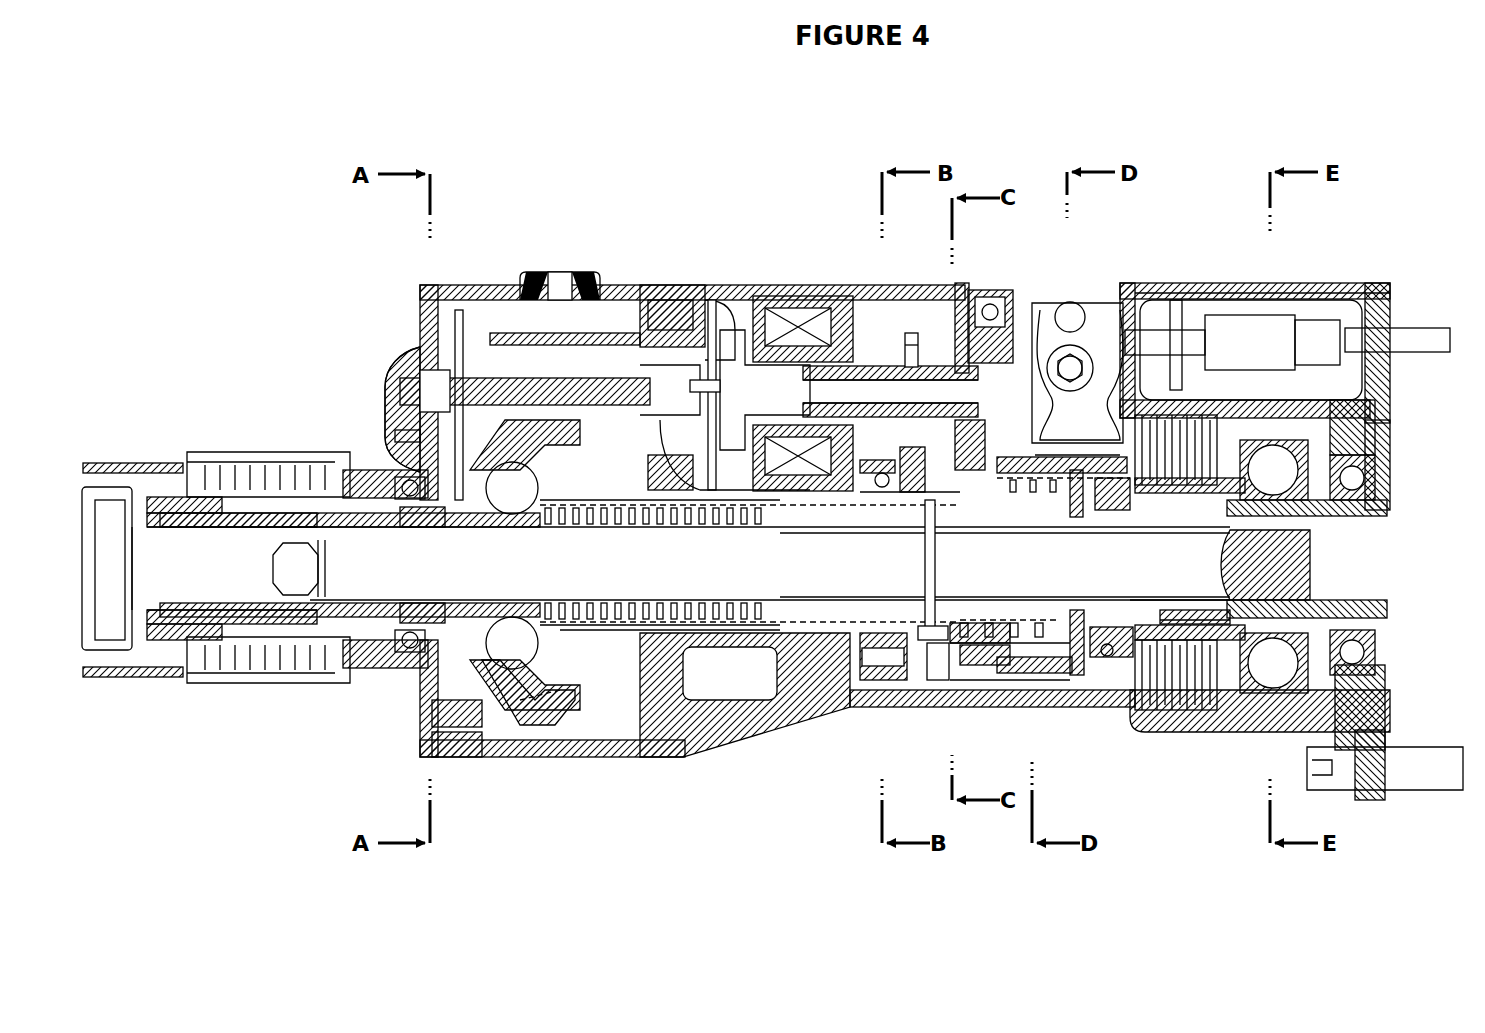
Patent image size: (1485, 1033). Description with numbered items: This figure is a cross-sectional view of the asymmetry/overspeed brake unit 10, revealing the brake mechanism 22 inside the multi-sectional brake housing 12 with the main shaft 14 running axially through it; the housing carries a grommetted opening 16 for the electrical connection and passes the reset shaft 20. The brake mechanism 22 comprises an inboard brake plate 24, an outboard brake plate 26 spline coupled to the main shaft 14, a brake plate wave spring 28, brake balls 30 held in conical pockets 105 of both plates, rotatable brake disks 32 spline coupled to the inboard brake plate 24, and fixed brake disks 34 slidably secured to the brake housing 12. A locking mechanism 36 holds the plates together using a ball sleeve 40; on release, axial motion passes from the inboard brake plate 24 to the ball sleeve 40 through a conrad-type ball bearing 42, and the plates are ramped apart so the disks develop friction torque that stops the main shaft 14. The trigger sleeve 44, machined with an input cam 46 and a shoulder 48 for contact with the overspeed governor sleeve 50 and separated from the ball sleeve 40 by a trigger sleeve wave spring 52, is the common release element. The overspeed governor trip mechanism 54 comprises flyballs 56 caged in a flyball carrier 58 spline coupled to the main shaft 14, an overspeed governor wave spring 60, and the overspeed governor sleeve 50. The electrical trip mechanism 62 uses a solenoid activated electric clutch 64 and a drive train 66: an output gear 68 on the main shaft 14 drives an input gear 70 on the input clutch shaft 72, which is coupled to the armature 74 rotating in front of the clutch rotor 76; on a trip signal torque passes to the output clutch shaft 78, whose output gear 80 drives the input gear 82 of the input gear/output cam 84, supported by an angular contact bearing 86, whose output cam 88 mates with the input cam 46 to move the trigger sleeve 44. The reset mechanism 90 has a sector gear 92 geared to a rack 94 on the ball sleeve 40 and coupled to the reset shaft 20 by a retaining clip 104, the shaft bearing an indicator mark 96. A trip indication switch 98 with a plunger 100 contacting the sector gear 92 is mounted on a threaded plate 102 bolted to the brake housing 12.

The asymmetry/overspeed brake unit 10 is at (278, 190).
The brake housing 12 is at (660, 290).
The main shaft 14 is at (1310, 552).
The grommetted opening 16 is at (571, 283).
The reset shaft 20 is at (1090, 340).
The brake mechanism 22 is at (1130, 738).
The inboard brake plate 24 is at (1252, 690).
The outboard brake plate 26 is at (1392, 618).
The brake plate wave spring 28 is at (1195, 612).
The brake balls 30 is at (1300, 480).
The rotatable brake disks 32 is at (1170, 672).
The fixed brake disks 34 is at (1195, 705).
The locking mechanism 36 is at (970, 712).
The ball sleeve 40 is at (1063, 690).
The conrad-type ball bearing 42 is at (1100, 690).
The trigger sleeve 44 is at (985, 700).
The input cam 46 is at (936, 700).
The shoulder 48 is at (983, 625).
The overspeed governor sleeve 50 is at (642, 628).
The trigger sleeve wave spring 52 is at (1012, 505).
The overspeed governor trip mechanism 54 is at (556, 763).
The flyballs 56 is at (506, 700).
The flyball carrier 58 is at (560, 722).
The overspeed governor wave spring 60 is at (700, 610).
The electrical trip mechanism 62 is at (722, 235).
The solenoid activated electric clutch 64 is at (800, 278).
The drive train 66 is at (488, 372).
The output gear 68 is at (430, 655).
The input gear 70 is at (438, 340).
The input clutch shaft 72 is at (522, 398).
The armature 74 is at (746, 300).
The clutch rotor 76 is at (840, 298).
The output clutch shaft 78 is at (882, 368).
The output gear 80 is at (912, 345).
The input gear 82 is at (912, 700).
The input gear/output cam 84 is at (920, 458).
The angular contact bearing 86 is at (862, 700).
The output cam 88 is at (922, 640).
The reset mechanism 90 is at (1147, 275).
The sector gear 92 is at (1040, 330).
The rack 94 is at (1115, 520).
The indicator mark 96 is at (1025, 335).
The trip indication switch 98 is at (1275, 330).
The plunger 100 is at (1112, 330).
The threaded plate 102 is at (1175, 330).
The retaining clip 104 is at (1072, 345).
The conical pockets 105 is at (1380, 375).